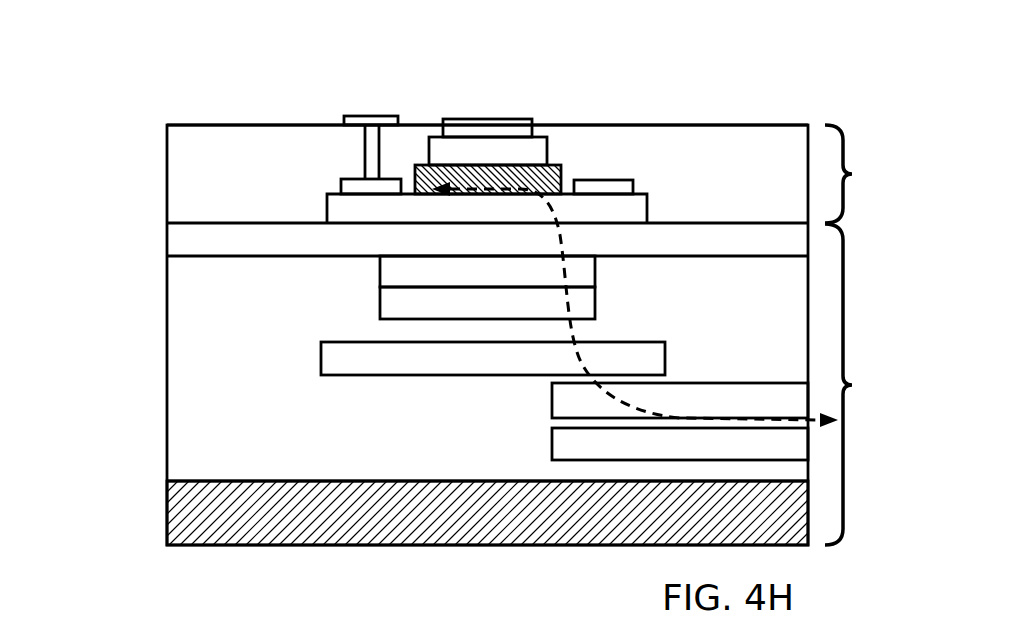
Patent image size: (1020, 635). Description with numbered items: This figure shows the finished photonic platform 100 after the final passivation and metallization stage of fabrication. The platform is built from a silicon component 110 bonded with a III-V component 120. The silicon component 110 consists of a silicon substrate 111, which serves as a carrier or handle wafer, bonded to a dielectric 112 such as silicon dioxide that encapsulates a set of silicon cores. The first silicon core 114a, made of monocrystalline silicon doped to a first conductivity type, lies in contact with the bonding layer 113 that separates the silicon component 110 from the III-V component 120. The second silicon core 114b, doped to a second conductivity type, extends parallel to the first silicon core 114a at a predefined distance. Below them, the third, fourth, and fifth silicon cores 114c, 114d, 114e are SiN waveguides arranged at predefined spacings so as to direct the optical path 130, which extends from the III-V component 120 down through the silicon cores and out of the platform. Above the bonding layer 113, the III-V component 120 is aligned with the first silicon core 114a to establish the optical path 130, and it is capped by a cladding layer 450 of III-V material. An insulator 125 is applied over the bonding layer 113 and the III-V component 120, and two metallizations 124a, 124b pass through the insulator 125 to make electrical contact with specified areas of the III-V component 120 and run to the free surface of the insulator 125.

The photonic platform 100 is at (122, 98).
The silicon component 110 is at (852, 385).
The silicon substrate 111 is at (185, 517).
The dielectric 112 is at (185, 455).
The bonding layer 113 is at (185, 242).
The first silicon core 114a is at (398, 270).
The second silicon core 114b is at (398, 302).
The third silicon core 114c is at (343, 356).
The fourth silicon core 114d is at (566, 398).
The fifth silicon core 114e is at (566, 440).
The III-V component 120 is at (852, 174).
The metallization 124a is at (365, 116).
The metallization 124b is at (488, 119).
The insulator 125 is at (185, 181).
The optical path 130 is at (585, 362).
The cladding layer 450 is at (237, 125).